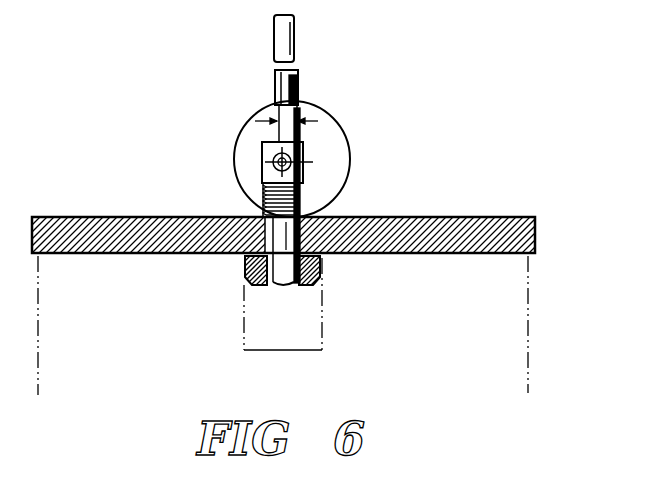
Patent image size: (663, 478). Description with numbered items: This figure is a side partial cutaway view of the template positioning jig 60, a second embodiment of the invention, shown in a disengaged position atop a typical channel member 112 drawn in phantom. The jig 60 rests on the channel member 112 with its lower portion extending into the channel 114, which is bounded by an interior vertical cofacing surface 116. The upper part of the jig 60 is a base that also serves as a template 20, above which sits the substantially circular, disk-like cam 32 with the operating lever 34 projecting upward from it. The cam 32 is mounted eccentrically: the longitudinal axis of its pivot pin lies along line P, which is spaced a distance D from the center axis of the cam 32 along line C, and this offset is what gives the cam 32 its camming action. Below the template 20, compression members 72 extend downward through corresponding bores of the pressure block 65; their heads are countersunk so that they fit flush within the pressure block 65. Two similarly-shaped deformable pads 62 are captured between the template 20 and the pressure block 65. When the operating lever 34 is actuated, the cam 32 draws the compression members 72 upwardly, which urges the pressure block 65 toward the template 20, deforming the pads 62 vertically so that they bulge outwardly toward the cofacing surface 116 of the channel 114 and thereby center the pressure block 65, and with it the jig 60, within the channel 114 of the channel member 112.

The template positioning jig 60 is at (126, 73).
The operating lever 34 is at (275, 33).
The pivot pin axis line P is at (277, 88).
The cam center axis line C is at (299, 86).
The spacing distance D is at (299, 111).
The cam 32 is at (347, 130).
The compression members 72 is at (275, 238).
The template 20 is at (476, 232).
The deformable pads 62 is at (321, 272).
The pressure block 65 is at (262, 286).
The channel member 112 is at (513, 320).
The channel 114 is at (310, 340).
The cofacing surface 116 is at (245, 336).